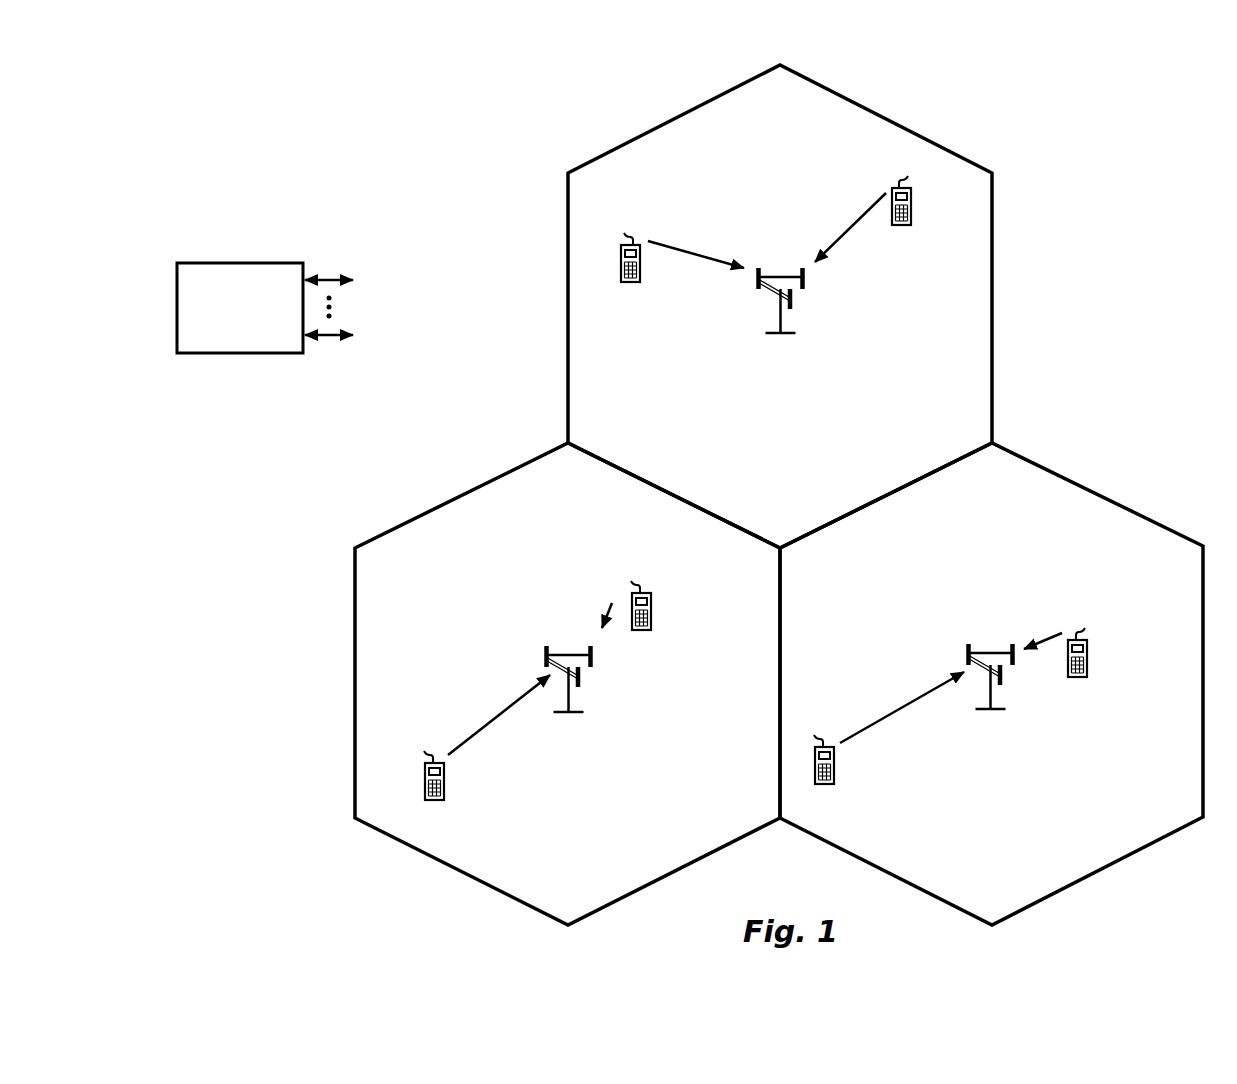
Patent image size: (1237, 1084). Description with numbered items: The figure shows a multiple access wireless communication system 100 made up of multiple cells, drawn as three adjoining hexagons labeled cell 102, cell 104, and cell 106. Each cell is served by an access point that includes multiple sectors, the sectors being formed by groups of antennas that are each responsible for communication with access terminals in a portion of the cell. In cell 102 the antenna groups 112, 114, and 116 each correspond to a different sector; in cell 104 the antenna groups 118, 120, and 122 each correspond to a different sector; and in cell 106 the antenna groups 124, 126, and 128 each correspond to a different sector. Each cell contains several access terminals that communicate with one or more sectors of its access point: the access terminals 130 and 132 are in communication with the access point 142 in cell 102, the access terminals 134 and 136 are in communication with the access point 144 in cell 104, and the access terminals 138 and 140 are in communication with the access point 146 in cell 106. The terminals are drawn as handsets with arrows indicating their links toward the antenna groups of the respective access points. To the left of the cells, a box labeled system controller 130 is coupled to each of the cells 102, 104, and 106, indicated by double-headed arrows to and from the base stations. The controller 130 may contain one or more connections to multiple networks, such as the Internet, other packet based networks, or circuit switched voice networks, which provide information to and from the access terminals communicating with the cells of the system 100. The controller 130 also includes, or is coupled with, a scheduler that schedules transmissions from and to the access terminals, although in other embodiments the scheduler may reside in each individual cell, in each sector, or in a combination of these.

The multiple access wireless communication system 100 is at (1152, 97).
The cell 102 is at (1014, 486).
The cell 104 is at (764, 586).
The cell 106 is at (615, 437).
The antenna group 112 is at (967, 650).
The antenna group 114 is at (1003, 681).
The antenna group 116 is at (1016, 660).
The antenna group 118 is at (581, 683).
The antenna group 120 is at (594, 661).
The antenna group 122 is at (547, 648).
The antenna group 124 is at (758, 291).
The antenna group 126 is at (795, 302).
The antenna group 128 is at (805, 286).
The controller 130 is at (303, 263).
The access terminal 132 is at (888, 728).
The access terminal 134 is at (626, 592).
The access terminal 136 is at (481, 737).
The access terminal 138 is at (626, 235).
The access terminal 140 is at (870, 205).
The access point 142 is at (1000, 653).
The access point 144 is at (569, 653).
The access point 146 is at (781, 273).